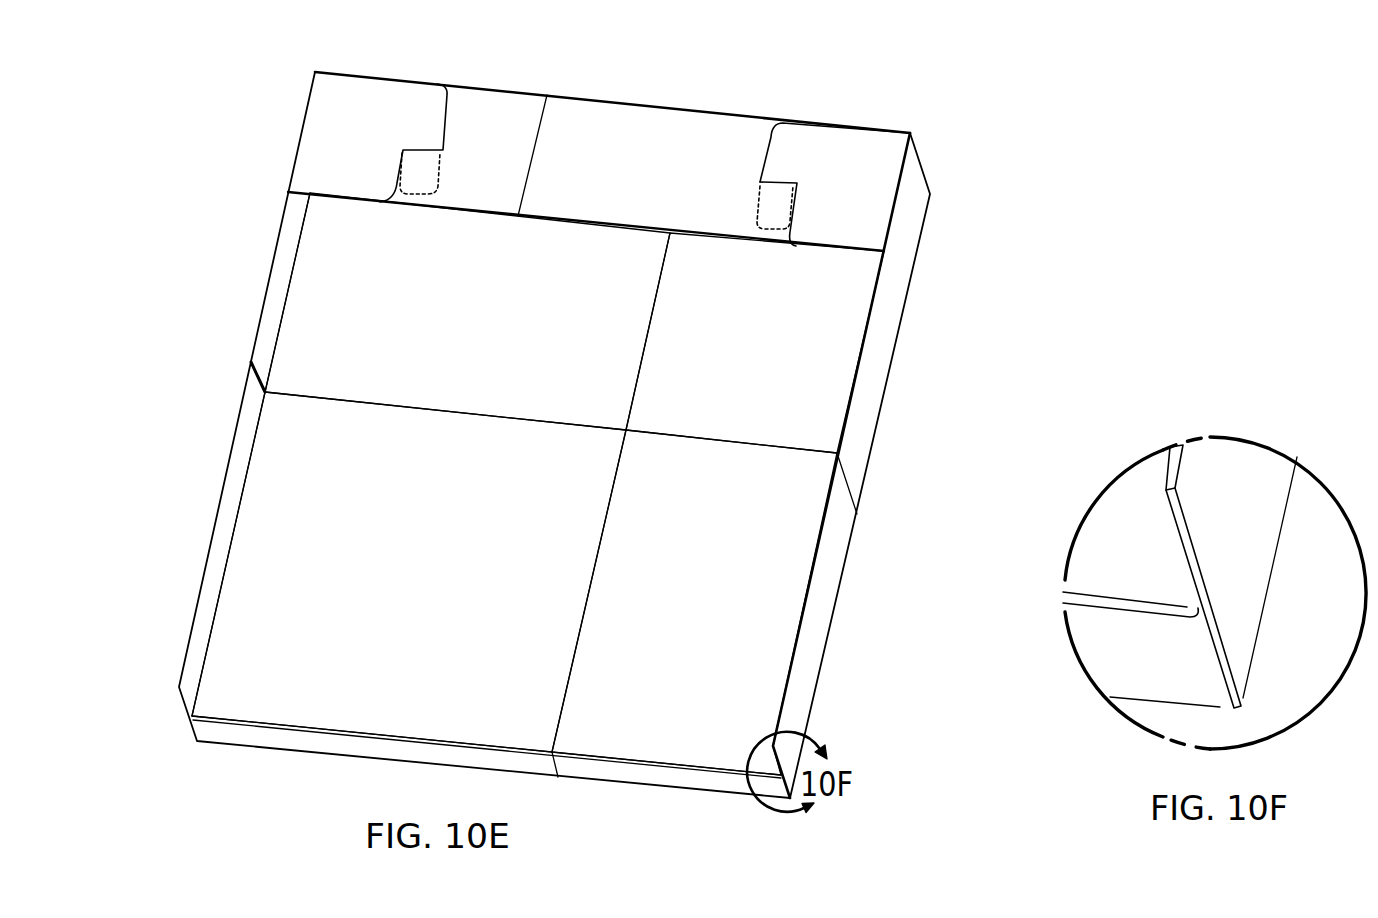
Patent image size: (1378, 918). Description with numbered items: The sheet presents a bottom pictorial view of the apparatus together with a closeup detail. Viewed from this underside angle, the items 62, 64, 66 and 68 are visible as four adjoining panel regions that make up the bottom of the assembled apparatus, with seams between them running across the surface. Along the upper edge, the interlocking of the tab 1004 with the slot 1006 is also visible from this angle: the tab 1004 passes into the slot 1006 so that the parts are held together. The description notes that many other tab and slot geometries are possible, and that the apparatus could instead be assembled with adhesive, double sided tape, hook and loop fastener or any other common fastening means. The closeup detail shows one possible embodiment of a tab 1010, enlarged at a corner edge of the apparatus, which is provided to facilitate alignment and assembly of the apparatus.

In FIG. 10E, the item 62 is at (765, 353).
In FIG. 10E, the item 64 is at (442, 298).
In FIG. 10E, the item 66 is at (389, 600).
In FIG. 10E, the item 68 is at (702, 642).
In FIG. 10E, the tab 1004 is at (756, 228).
In FIG. 10E, the slot 1006 is at (760, 182).
In FIG. 10F, the tab 1010 is at (1188, 604).